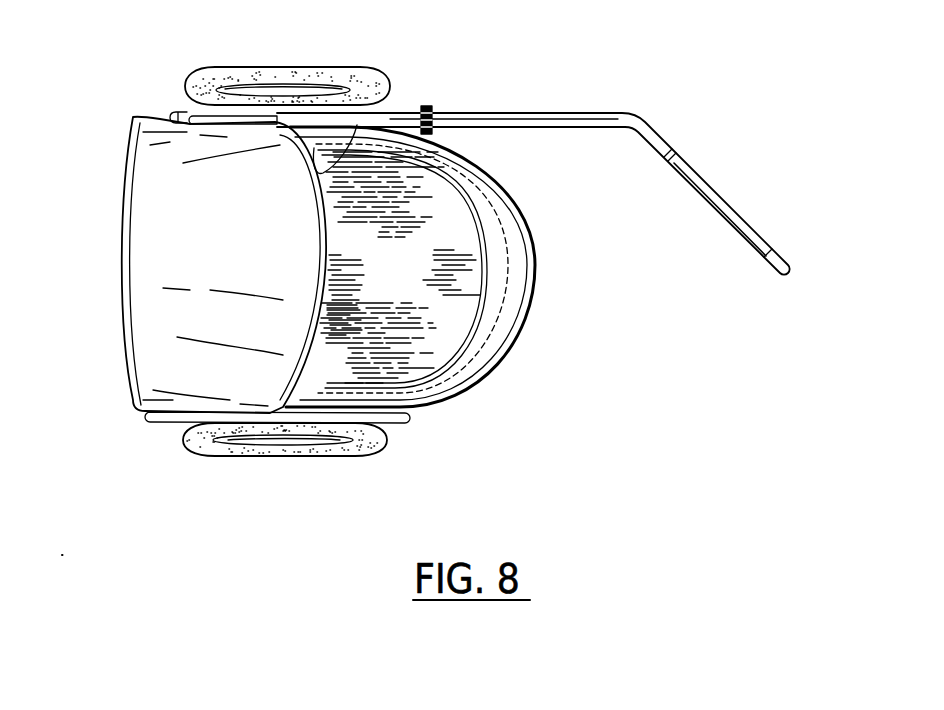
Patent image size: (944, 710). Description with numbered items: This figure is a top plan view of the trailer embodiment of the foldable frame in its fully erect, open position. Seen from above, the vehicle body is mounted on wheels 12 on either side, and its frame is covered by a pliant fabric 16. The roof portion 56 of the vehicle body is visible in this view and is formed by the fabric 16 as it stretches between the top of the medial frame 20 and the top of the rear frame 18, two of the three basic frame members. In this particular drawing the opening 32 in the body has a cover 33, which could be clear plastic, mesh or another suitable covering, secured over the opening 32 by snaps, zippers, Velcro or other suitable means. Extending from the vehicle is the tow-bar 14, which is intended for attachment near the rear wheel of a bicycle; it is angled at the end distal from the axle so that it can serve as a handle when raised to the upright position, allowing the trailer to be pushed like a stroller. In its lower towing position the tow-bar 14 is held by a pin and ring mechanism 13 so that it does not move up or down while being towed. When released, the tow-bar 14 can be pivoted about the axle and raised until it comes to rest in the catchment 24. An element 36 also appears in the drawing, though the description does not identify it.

The wheels 12 is at (223, 78).
The pin and ring mechanism 13 is at (430, 106).
The tow-bar 14 is at (577, 113).
The pliant fabric 16 is at (180, 265).
The rear frame 18 is at (122, 178).
The medial frame 20 is at (357, 125).
The catchment 24 is at (178, 111).
The opening 32 is at (487, 297).
The cover 33 is at (438, 312).
The base plate 36 is at (407, 422).
The roof portion 56 is at (163, 253).